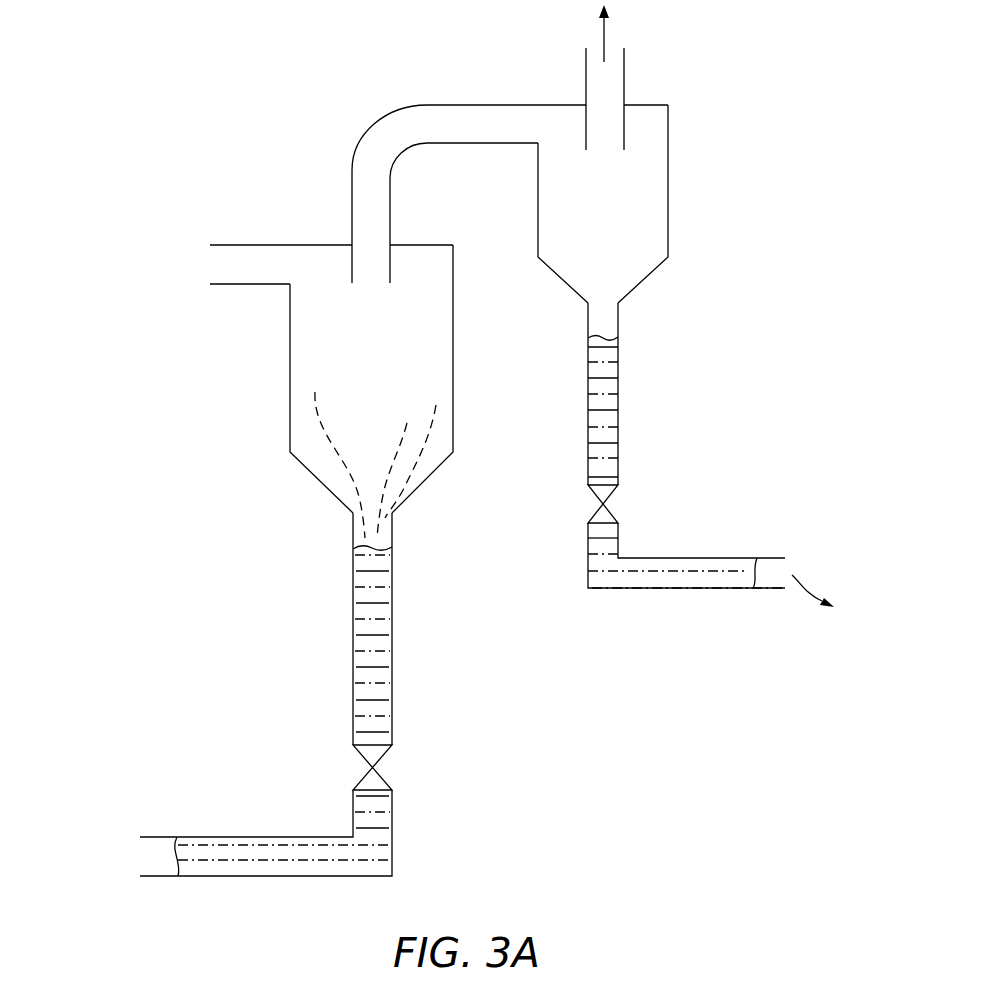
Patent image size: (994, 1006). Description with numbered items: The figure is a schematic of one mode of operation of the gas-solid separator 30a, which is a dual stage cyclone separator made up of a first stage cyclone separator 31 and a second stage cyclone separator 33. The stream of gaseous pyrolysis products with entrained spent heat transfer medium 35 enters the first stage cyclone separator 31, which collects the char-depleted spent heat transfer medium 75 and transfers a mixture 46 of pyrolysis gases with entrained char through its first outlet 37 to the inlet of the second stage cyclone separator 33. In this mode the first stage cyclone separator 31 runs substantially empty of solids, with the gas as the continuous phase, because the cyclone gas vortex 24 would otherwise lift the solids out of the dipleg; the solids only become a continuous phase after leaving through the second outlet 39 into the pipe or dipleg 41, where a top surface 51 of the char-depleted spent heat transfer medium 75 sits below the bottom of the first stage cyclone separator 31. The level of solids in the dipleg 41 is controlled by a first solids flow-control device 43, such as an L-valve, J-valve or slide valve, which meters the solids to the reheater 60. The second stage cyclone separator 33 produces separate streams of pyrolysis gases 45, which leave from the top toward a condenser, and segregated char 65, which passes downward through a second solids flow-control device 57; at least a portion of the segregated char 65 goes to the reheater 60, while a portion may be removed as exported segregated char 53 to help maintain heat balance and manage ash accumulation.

The gas-solid separator 30a is at (468, 40).
The first stage cyclone separator 31 is at (355, 364).
The second stage cyclone separator 33 is at (590, 220).
The gaseous pyrolysis products with entrained spent heat transfer medium 35 is at (222, 264).
The first outlet 37 is at (380, 207).
The mixture of pyrolysis gases with entrained char 46 is at (380, 131).
The pyrolysis gases 45 is at (604, 33).
The cyclone gas vortex 24 is at (417, 465).
The second outlet 39 is at (387, 517).
The top surface 51 is at (358, 547).
The pipe or dipleg 41 is at (375, 629).
The char-depleted spent heat transfer medium 75 is at (357, 678).
The first solids flow-control device 43 is at (375, 765).
The reheater 60 is at (150, 857).
The segregated char 65 is at (597, 417).
The second solids flow-control device 57 is at (600, 505).
The exported segregated char 53 is at (800, 592).